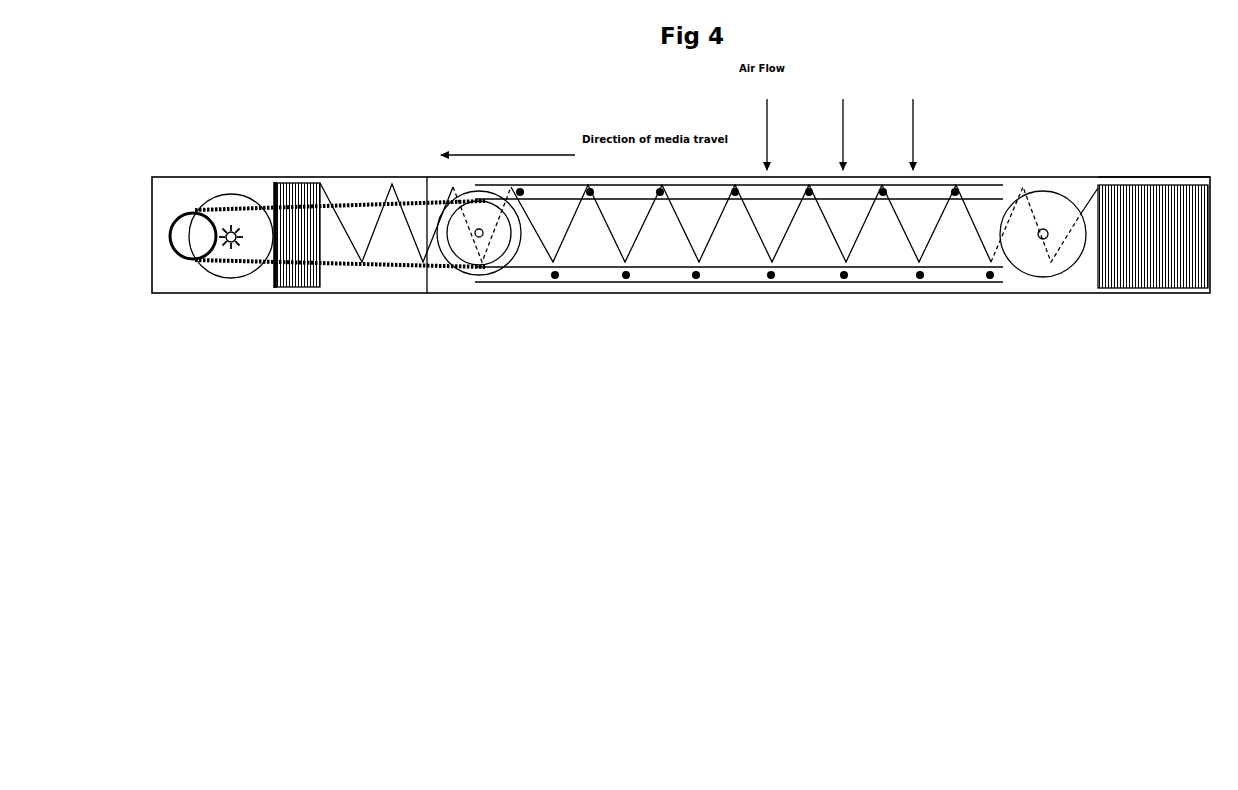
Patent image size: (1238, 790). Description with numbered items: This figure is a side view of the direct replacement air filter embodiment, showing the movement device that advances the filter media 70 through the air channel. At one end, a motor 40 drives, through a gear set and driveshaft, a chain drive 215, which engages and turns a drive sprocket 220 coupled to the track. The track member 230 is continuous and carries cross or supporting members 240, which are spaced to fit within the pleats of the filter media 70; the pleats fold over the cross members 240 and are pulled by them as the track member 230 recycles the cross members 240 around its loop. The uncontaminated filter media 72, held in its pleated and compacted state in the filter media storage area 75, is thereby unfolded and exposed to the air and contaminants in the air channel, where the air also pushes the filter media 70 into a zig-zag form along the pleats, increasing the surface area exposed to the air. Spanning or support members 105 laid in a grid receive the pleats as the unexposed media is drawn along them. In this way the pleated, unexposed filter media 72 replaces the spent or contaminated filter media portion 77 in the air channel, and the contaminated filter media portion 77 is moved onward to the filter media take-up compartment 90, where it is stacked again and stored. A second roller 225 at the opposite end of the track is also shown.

The motor 40 is at (249, 192).
The filter media take-up compartment 90 is at (365, 179).
The filter media storage area 75 is at (1153, 137).
The contaminated filter media portion 77 is at (280, 286).
The chain drive 215 is at (341, 270).
The drive sprocket 220 is at (454, 276).
The supporting members 240 is at (560, 205).
The filter media 70 is at (753, 232).
The track member 230 is at (871, 276).
The spanning or support members 105 is at (951, 203).
The idler roller 225 is at (1032, 260).
The uncontaminated filter media 72 is at (1171, 240).